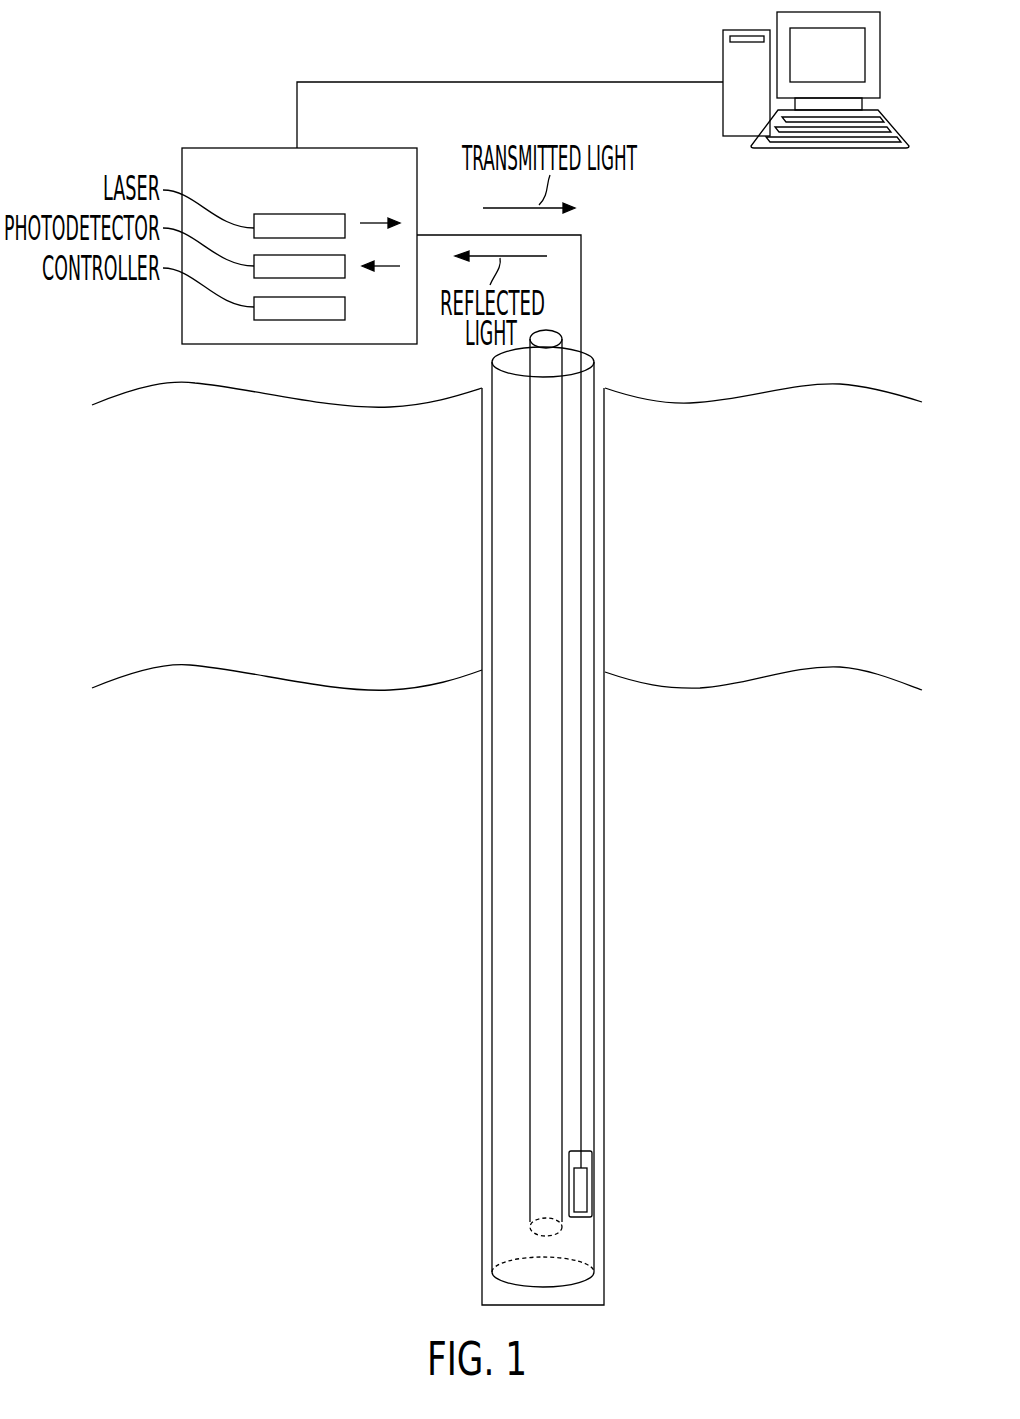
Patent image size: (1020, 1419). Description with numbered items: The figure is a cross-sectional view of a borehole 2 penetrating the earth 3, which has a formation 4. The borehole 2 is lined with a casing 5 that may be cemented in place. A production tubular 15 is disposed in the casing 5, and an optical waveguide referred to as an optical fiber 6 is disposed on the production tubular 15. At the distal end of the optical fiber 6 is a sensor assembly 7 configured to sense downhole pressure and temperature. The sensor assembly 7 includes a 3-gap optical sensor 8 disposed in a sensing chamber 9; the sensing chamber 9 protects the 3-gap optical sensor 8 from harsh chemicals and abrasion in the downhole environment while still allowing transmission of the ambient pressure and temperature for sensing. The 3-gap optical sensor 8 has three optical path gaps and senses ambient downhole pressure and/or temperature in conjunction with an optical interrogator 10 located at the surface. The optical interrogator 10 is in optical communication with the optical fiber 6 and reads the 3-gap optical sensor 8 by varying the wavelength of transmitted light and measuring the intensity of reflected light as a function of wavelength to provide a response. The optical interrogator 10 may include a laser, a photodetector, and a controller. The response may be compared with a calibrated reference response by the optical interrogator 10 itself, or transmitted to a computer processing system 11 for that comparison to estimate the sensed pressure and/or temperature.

The borehole 2 is at (606, 464).
The earth 3 is at (283, 478).
The formation 4 is at (278, 778).
The casing 5 is at (595, 378).
The optical fiber 6 is at (582, 527).
The sensor assembly 7 is at (708, 1183).
The 3-gap optical sensor 8 is at (582, 1190).
The sensing chamber 9 is at (586, 1160).
The optical interrogator 10 is at (417, 225).
The computer processing system 11 is at (723, 50).
The production tubular 15 is at (563, 603).